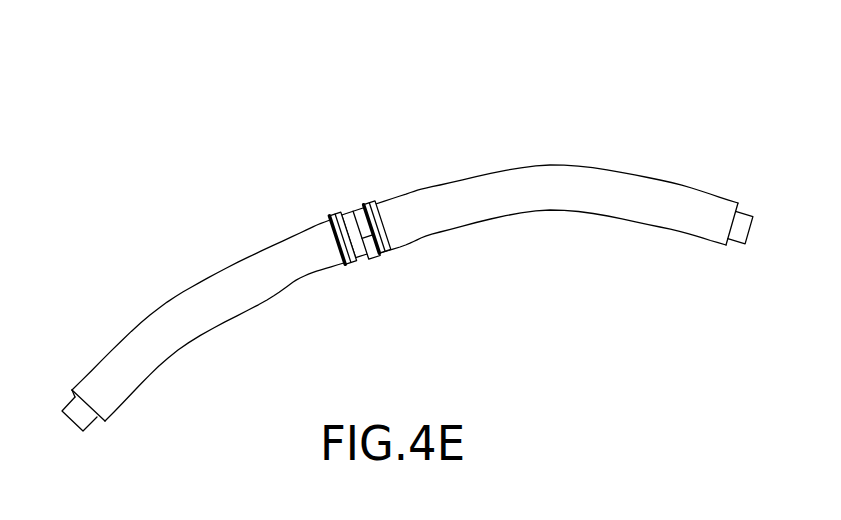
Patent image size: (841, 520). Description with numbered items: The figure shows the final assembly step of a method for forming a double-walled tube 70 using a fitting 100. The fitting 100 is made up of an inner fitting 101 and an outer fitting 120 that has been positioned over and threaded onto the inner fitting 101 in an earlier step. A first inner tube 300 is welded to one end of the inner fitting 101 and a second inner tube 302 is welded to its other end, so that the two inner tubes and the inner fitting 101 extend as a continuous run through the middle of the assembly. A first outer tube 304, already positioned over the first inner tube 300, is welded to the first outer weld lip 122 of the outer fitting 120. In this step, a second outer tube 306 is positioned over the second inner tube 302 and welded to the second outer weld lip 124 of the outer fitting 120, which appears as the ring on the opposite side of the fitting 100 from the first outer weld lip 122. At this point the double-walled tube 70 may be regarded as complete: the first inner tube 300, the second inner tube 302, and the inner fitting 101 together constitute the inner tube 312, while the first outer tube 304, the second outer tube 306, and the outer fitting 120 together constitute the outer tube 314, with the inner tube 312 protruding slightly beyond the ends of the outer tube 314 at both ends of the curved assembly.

The double-walled tube 70 is at (193, 76).
The fitting 100 is at (346, 183).
The inner fitting 101 is at (364, 261).
The outer fitting 120 is at (358, 207).
The first outer weld lip 122 is at (342, 253).
The second outer weld lip 124 is at (391, 249).
The first inner tube 300 is at (78, 424).
The second inner tube 302 is at (752, 222).
The first outer tube 304 is at (217, 275).
The second outer tube 306 is at (612, 177).
The inner tube 312 is at (61, 398).
The outer tube 314 is at (116, 328).